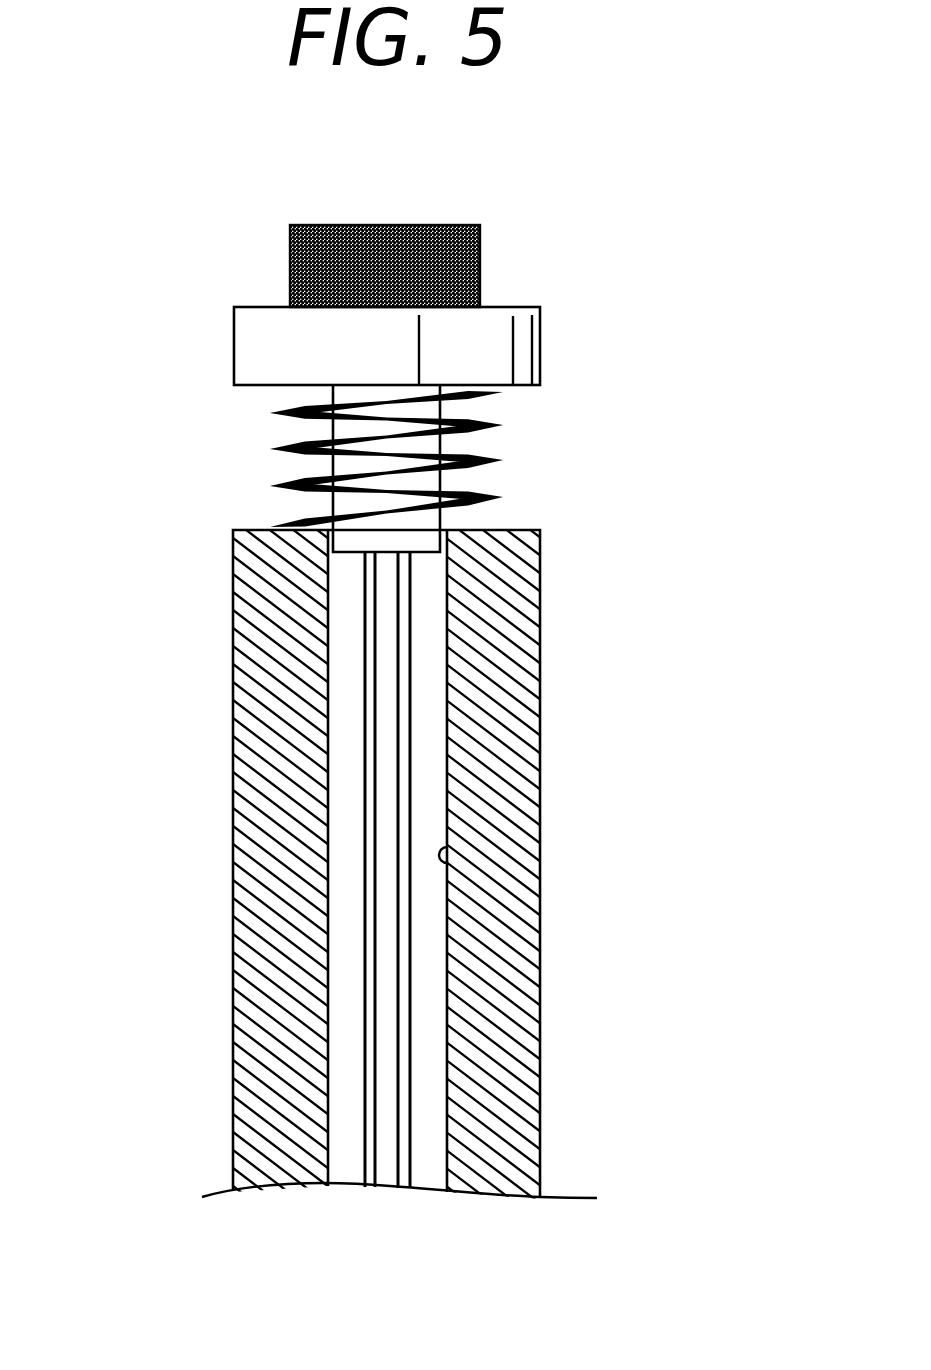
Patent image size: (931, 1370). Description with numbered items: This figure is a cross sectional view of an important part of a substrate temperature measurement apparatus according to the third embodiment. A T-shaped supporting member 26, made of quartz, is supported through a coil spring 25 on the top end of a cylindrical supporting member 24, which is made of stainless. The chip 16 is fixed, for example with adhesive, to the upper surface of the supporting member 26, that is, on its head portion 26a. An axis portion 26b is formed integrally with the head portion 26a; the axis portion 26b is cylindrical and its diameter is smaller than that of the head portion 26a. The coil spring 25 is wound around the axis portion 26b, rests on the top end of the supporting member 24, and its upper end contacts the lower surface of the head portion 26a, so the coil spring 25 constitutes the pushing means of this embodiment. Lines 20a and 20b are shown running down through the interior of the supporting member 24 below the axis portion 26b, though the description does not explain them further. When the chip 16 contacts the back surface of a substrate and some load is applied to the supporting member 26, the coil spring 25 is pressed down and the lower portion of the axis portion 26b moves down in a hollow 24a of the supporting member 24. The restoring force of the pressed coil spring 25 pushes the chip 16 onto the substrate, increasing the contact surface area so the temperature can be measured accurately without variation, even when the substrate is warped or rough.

The chip 16 is at (390, 230).
The supporting member 26 is at (546, 357).
The head portion 26a is at (247, 345).
The axis portion 26b is at (342, 468).
The coil spring 25 is at (478, 457).
The supporting member 24 is at (527, 722).
The hollow 24a is at (447, 880).
The lead wire 20a is at (366, 1116).
The lead wire 20b is at (420, 1128).